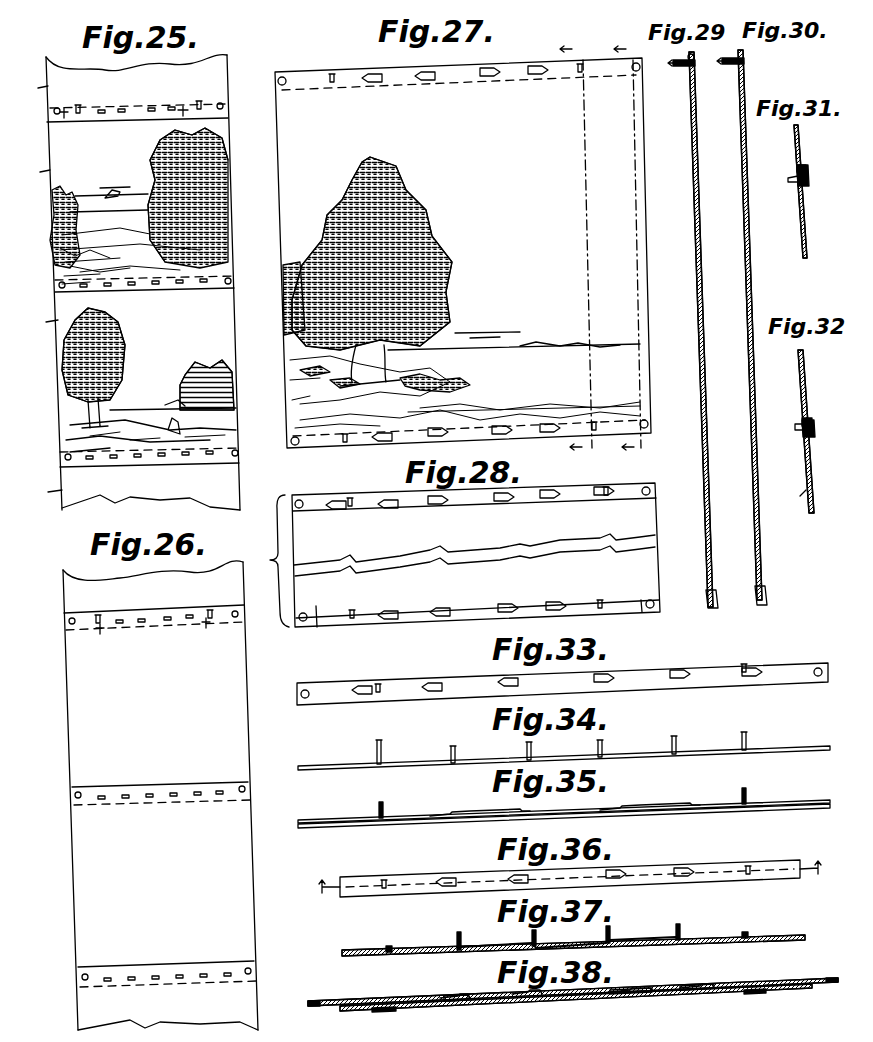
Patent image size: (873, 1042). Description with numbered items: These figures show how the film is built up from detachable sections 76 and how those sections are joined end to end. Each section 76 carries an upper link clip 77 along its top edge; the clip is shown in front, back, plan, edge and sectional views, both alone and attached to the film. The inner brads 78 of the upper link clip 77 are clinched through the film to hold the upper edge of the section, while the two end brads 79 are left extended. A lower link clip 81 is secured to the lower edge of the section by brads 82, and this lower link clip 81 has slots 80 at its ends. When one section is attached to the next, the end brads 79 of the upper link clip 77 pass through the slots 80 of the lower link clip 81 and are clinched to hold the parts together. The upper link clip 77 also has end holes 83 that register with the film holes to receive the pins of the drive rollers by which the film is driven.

In FIG. 25, the detachable section 76 is at (130, 282).
In FIG. 26, the detachable section 76 is at (160, 795).
In FIG. 27, the detachable section 76 is at (650, 190).
In FIG. 28, the detachable section 76 is at (650, 558).
In FIG. 29, the detachable section 76 is at (691, 150).
In FIG. 30, the detachable section 76 is at (740, 150).
In FIG. 31, the detachable section 76 is at (794, 140).
In FIG. 32, the detachable section 76 is at (800, 378).
In FIG. 35, the detachable section 76 is at (342, 820).
In FIG. 38, the detachable section 76 is at (364, 1002).
In FIG. 29, the upper link clip 77 is at (695, 66).
In FIG. 30, the upper link clip 77 is at (745, 62).
In FIG. 31, the upper link clip 77 is at (809, 172).
In FIG. 32, the upper link clip 77 is at (816, 426).
In FIG. 33, the upper link clip 77 is at (408, 684).
In FIG. 34, the upper link clip 77 is at (338, 766).
In FIG. 35, the upper link clip 77 is at (340, 828).
In FIG. 25, the inner brads 78 is at (168, 107).
In FIG. 27, the inner brads 78 is at (420, 78).
In FIG. 28, the inner brads 78 is at (436, 504).
In FIG. 33, the inner brads 78 is at (506, 682).
In FIG. 34, the inner brads 78 is at (527, 744).
In FIG. 35, the inner brads 78 is at (520, 808).
In FIG. 25, the end brads 79 is at (78, 105).
In FIG. 26, the end brads 79 is at (98, 615).
In FIG. 27, the end brads 79 is at (332, 74).
In FIG. 28, the end brads 79 is at (350, 498).
In FIG. 29, the end brads 79 is at (676, 66).
In FIG. 30, the end brads 79 is at (726, 58).
In FIG. 31, the end brads 79 is at (790, 180).
In FIG. 32, the end brads 79 is at (796, 428).
In FIG. 33, the end brads 79 is at (378, 684).
In FIG. 34, the end brads 79 is at (380, 740).
In FIG. 35, the end brads 79 is at (382, 802).
In FIG. 25, the slots 80 is at (74, 118).
In FIG. 26, the slots 80 is at (100, 630).
In FIG. 27, the slots 80 is at (344, 444).
In FIG. 28, the slots 80 is at (352, 620).
In FIG. 36, the slots 80 is at (386, 880).
In FIG. 37, the slots 80 is at (390, 940).
In FIG. 38, the slots 80 is at (386, 1012).
In FIG. 31, the lower link clip 81 is at (804, 165).
In FIG. 32, the lower link clip 81 is at (808, 418).
In FIG. 36, the lower link clip 81 is at (418, 888).
In FIG. 37, the lower link clip 81 is at (420, 950).
In FIG. 38, the lower link clip 81 is at (366, 1010).
In FIG. 26, the brads 82 is at (190, 615).
In FIG. 27, the brads 82 is at (430, 438).
In FIG. 28, the brads 82 is at (444, 616).
In FIG. 36, the brads 82 is at (514, 884).
In FIG. 37, the brads 82 is at (532, 932).
In FIG. 38, the brads 82 is at (458, 994).
In FIG. 25, the end holes 83 is at (223, 107).
In FIG. 26, the end holes 83 is at (69, 622).
In FIG. 27, the end holes 83 is at (282, 77).
In FIG. 28, the end holes 83 is at (300, 500).
In FIG. 29, the end holes 83 is at (694, 54).
In FIG. 33, the end holes 83 is at (306, 690).
In FIG. 38, the end holes 83 is at (320, 1000).